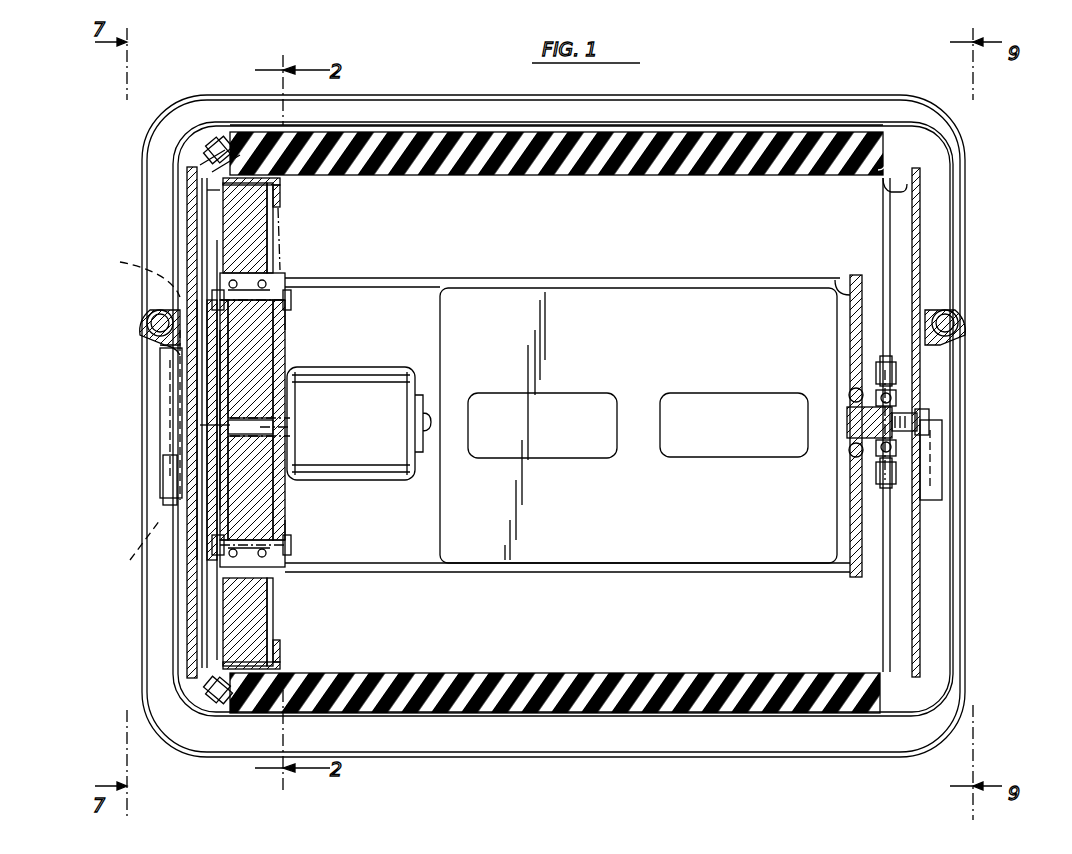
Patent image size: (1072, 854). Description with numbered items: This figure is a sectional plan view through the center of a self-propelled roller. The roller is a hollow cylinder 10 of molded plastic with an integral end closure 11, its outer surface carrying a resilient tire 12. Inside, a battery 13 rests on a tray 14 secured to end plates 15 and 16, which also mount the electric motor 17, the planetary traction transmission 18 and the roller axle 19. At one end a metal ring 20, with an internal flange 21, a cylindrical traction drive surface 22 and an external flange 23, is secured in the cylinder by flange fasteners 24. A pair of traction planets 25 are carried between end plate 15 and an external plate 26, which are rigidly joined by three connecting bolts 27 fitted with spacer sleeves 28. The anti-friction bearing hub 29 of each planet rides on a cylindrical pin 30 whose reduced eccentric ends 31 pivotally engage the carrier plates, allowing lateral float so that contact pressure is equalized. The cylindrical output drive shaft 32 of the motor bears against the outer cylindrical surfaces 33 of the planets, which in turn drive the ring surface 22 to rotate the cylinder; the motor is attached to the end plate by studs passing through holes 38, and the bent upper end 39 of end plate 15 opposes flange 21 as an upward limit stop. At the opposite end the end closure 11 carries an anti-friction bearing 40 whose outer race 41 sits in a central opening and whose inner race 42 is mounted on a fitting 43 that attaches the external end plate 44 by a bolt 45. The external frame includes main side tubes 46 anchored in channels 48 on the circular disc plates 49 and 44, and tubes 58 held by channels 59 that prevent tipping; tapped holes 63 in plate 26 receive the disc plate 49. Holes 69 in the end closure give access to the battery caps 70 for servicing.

The hollow cylinder 10 is at (470, 173).
The end closure 11 is at (890, 540).
The housing wall 12 is at (812, 140).
The battery 13 is at (640, 300).
The tray 14 is at (400, 555).
The end plate 15 is at (290, 340).
The end plate 16 is at (845, 287).
The electric motor 17 is at (370, 382).
The planetary traction transmission 18 is at (212, 248).
The roller axle 19 is at (900, 385).
The metal ring 20 is at (205, 180).
The internal flange 21 is at (282, 200).
The cylindrical traction drive surface 22 is at (220, 192).
The external flange 23 is at (205, 158).
The flange fasteners 24 is at (222, 148).
The traction planets 25 is at (268, 228).
The external plate 26 is at (205, 562).
The connecting bolts 27 is at (195, 380).
The spacer sleeves 28 is at (285, 350).
The anti-friction bearing hub 29 is at (285, 343).
The cylindrical pin 30 is at (280, 275).
The reduced eccentric ends 31 is at (205, 300).
The cylindrical output drive shaft 32 is at (300, 432).
The outer cylindrical surfaces 33 is at (230, 420).
The holes 38 is at (165, 455).
The upper end 39 is at (280, 228).
The anti-friction bearing 40 is at (925, 368).
The outer race 41 is at (885, 470).
The inner race 42 is at (900, 400).
The fitting 43 is at (850, 440).
The end plate 44 is at (915, 565).
The bolt 45 is at (930, 420).
The main side tubes 46 is at (148, 330).
The channel 48 is at (178, 352).
The circular disc plate 49 is at (185, 632).
The tubes 58 is at (152, 680).
The channels 59 is at (170, 487).
The tapped holes 63 is at (124, 408).
The holes 69 is at (905, 200).
The battery caps 70 is at (650, 378).